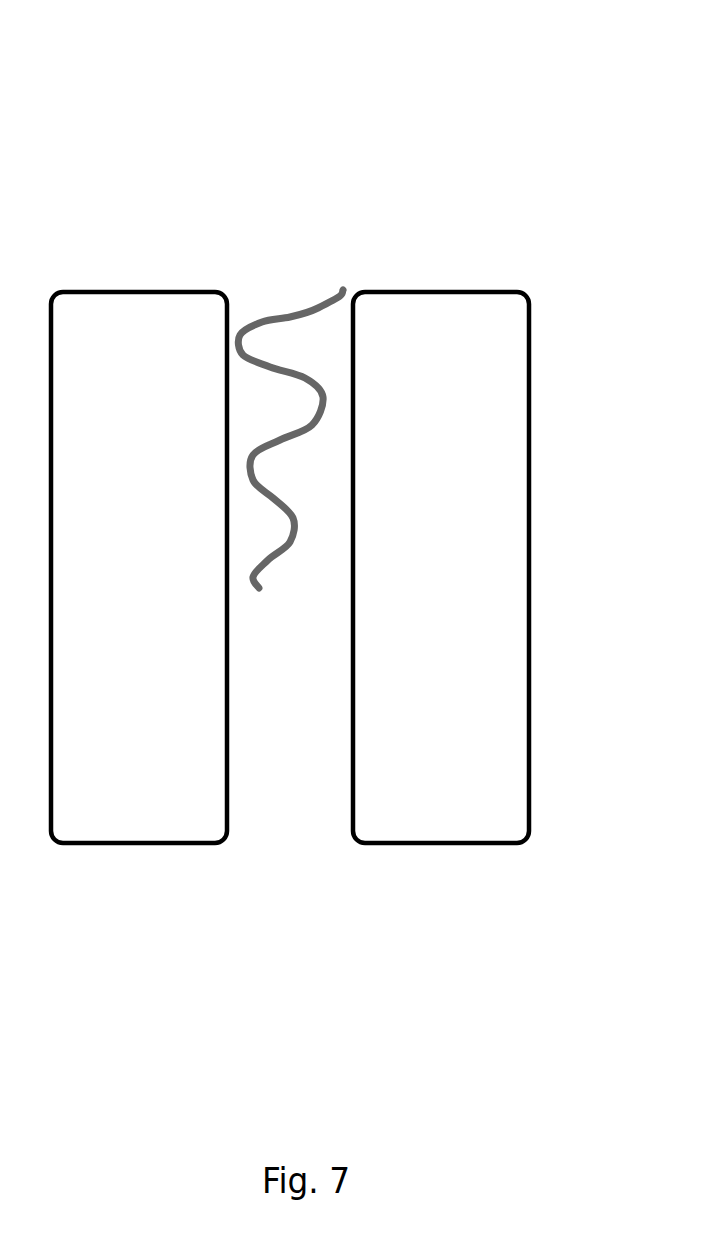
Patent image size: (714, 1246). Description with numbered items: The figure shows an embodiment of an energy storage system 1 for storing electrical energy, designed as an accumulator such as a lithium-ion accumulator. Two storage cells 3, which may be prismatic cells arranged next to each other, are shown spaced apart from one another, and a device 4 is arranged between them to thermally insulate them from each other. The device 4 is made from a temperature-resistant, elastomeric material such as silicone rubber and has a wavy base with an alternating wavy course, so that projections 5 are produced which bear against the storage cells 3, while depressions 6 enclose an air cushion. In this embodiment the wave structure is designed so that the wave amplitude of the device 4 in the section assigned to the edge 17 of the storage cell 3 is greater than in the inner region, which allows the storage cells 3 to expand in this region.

The energy storage system 1 is at (341, 233).
The edge of the storage cells 17 is at (128, 288).
The storage cells 3 is at (455, 452).
The device 4 is at (280, 314).
The projections 5 is at (236, 342).
The depressions 6 is at (312, 342).